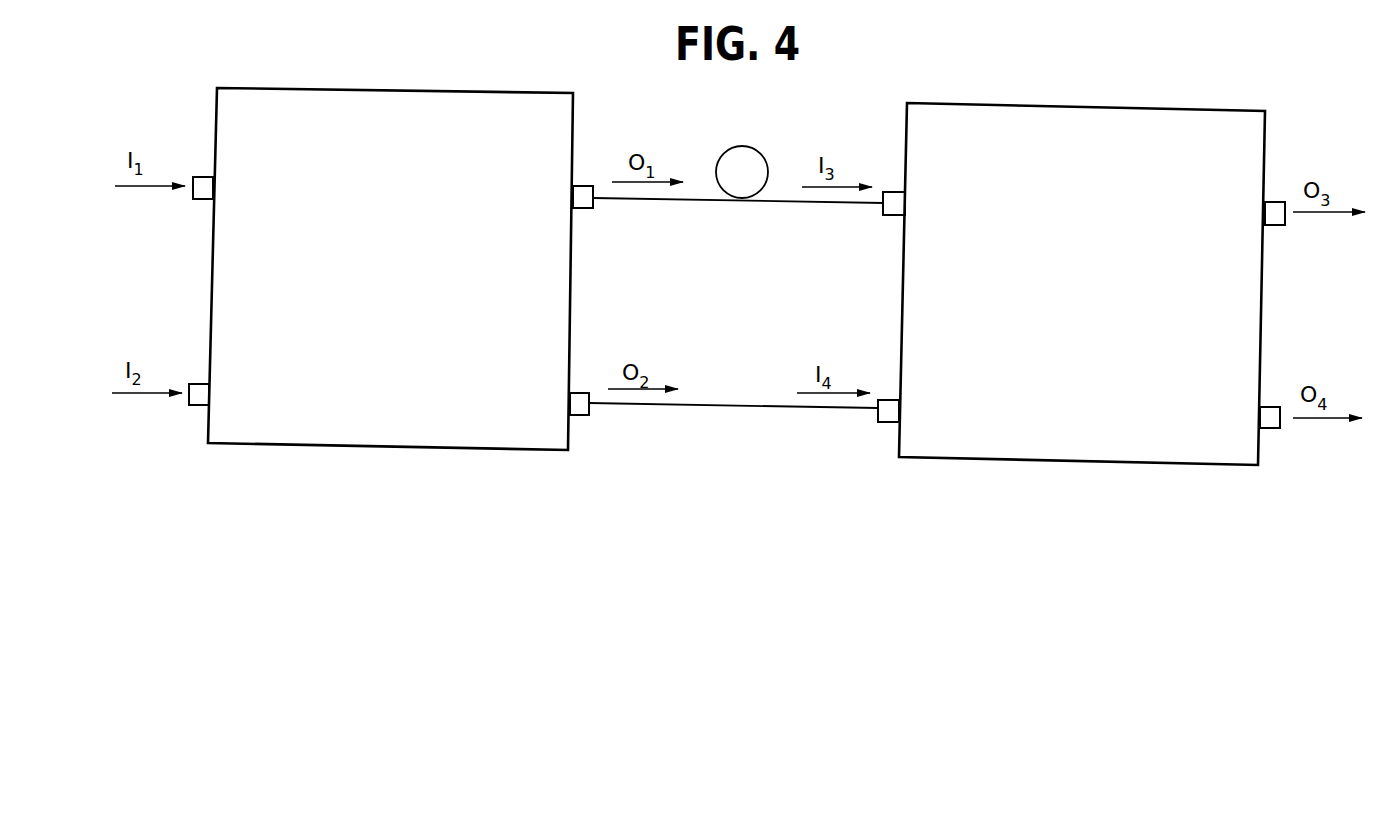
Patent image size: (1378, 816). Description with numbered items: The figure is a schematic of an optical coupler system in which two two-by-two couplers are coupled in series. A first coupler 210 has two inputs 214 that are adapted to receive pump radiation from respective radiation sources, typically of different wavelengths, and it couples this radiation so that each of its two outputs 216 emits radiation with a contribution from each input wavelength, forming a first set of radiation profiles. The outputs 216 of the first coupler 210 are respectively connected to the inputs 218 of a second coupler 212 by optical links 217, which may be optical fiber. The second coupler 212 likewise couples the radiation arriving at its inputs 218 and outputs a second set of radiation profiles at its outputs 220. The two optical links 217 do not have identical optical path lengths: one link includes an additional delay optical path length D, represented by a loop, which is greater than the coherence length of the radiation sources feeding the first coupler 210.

The first coupler 210 is at (248, 88).
The second coupler 212 is at (950, 103).
The inputs 214 is at (197, 177).
The outputs 216 is at (583, 186).
The optical links 217 is at (768, 200).
The inputs 218 is at (892, 192).
The outputs 220 is at (1275, 202).
The additional delay optical path length D is at (756, 147).